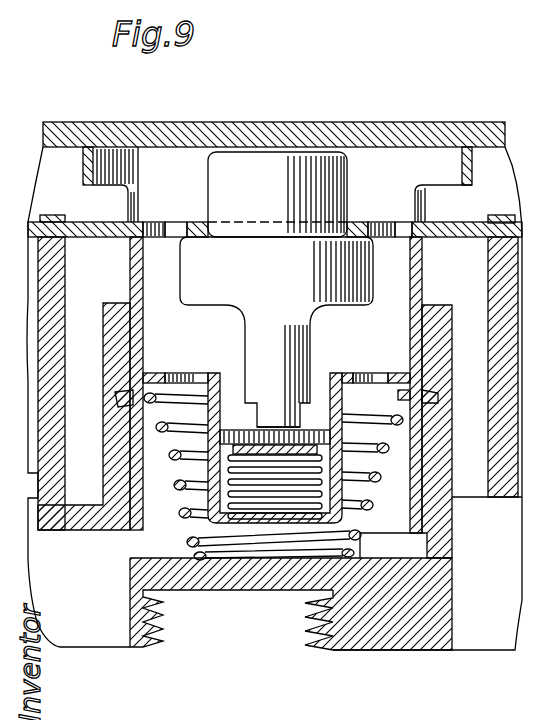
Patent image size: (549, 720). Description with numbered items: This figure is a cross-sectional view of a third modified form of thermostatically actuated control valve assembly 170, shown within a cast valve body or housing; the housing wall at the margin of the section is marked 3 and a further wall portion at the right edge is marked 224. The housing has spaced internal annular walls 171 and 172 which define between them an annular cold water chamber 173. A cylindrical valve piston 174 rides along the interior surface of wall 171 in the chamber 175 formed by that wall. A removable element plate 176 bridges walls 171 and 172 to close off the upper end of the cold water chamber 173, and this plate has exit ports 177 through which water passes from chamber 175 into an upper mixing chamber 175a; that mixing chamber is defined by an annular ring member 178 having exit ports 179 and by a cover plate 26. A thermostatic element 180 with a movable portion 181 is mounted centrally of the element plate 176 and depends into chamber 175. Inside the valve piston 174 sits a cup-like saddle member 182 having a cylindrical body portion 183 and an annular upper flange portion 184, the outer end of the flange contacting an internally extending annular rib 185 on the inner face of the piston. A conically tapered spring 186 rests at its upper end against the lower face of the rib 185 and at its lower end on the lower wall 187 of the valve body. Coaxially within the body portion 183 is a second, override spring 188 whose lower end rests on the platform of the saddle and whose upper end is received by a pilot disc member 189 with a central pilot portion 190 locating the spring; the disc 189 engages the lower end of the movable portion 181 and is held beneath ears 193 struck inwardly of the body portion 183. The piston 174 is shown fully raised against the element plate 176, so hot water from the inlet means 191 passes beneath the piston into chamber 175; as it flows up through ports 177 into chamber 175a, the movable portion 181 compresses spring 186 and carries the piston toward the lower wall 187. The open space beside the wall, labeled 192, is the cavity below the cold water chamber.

The housing 3 is at (88, 322).
The cover plate 26 is at (88, 130).
The control valve assembly 170 is at (409, 101).
The internal annular wall 171 is at (113, 310).
The internal annular wall 172 is at (63, 268).
The cold water chamber 173 is at (465, 345).
The valve piston 174 is at (143, 303).
The chamber 175 is at (236, 347).
The upper mixing chamber 175a is at (407, 179).
The element plate 176 is at (462, 221).
The exit ports 177 is at (170, 228).
The annular ring member 178 is at (83, 173).
The exit ports 179 is at (128, 207).
The thermostatic element 180 is at (264, 165).
The movable portion 181 is at (297, 428).
The saddle member 182 is at (424, 392).
The body portion 183 is at (302, 468).
The flange portion 184 is at (152, 373).
The annular rib 185 is at (408, 390).
The conically tapered spring 186 is at (183, 520).
The lower wall 187 is at (383, 578).
The second spring 188 is at (230, 503).
The pilot disc member 189 is at (300, 428).
The central pilot portion 190 is at (312, 462).
The inlet means 191 is at (90, 565).
The cavity 192 is at (470, 480).
The ears 193 is at (213, 425).
The wall 224 is at (538, 600).